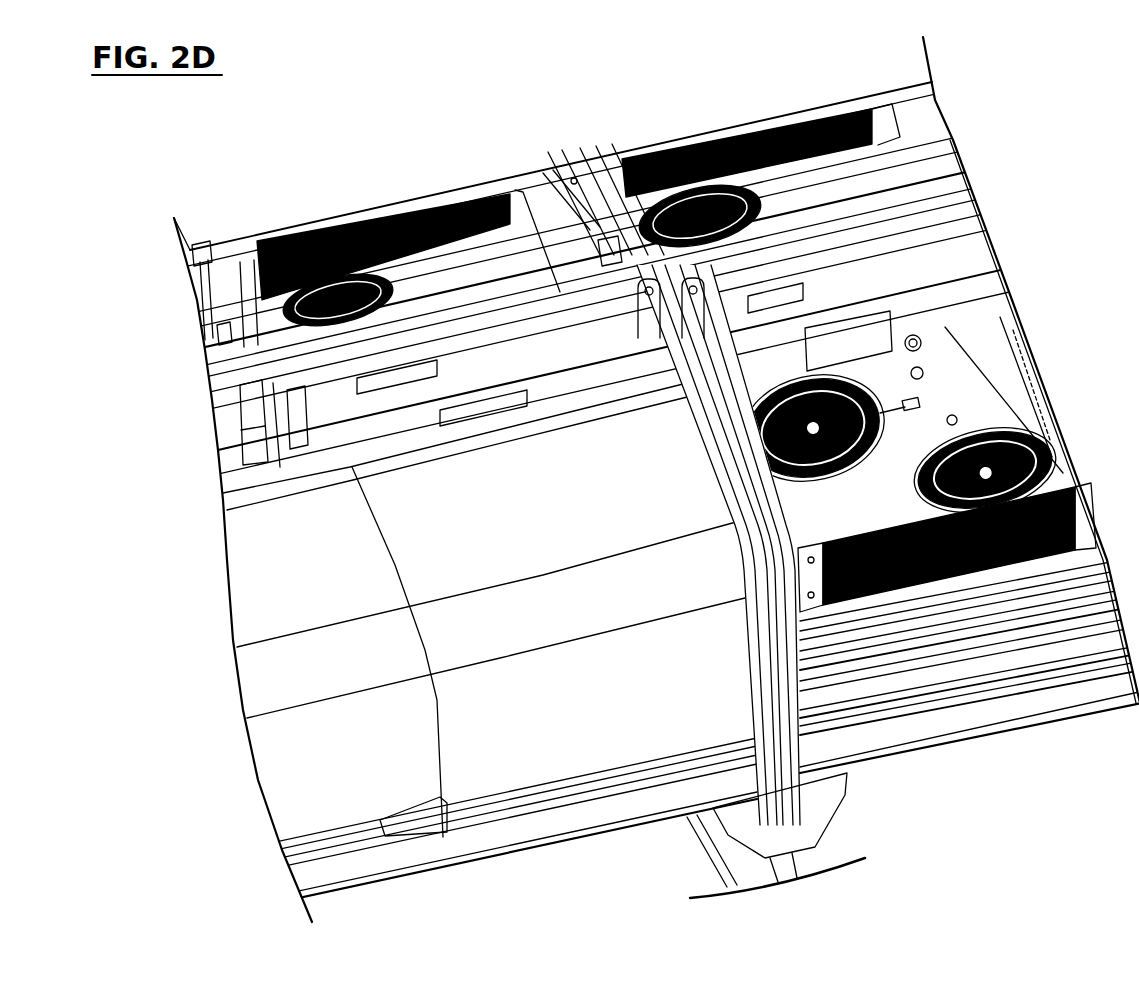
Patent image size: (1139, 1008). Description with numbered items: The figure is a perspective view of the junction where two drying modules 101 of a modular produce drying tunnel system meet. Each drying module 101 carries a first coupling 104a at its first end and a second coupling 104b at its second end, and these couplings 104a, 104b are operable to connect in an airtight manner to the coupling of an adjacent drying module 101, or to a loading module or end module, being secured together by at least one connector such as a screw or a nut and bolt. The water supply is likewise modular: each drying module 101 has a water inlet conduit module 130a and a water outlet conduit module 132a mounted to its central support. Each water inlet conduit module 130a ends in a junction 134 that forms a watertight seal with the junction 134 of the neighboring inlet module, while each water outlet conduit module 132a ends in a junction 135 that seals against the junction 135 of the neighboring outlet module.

The drying module 101 is at (350, 193).
The water outlet conduit module 132a is at (558, 285).
The junction 135 is at (608, 243).
The water inlet conduit module 130a is at (807, 233).
The junction 134 is at (660, 280).
The first coupling 104a is at (773, 557).
The second coupling 104b is at (752, 528).